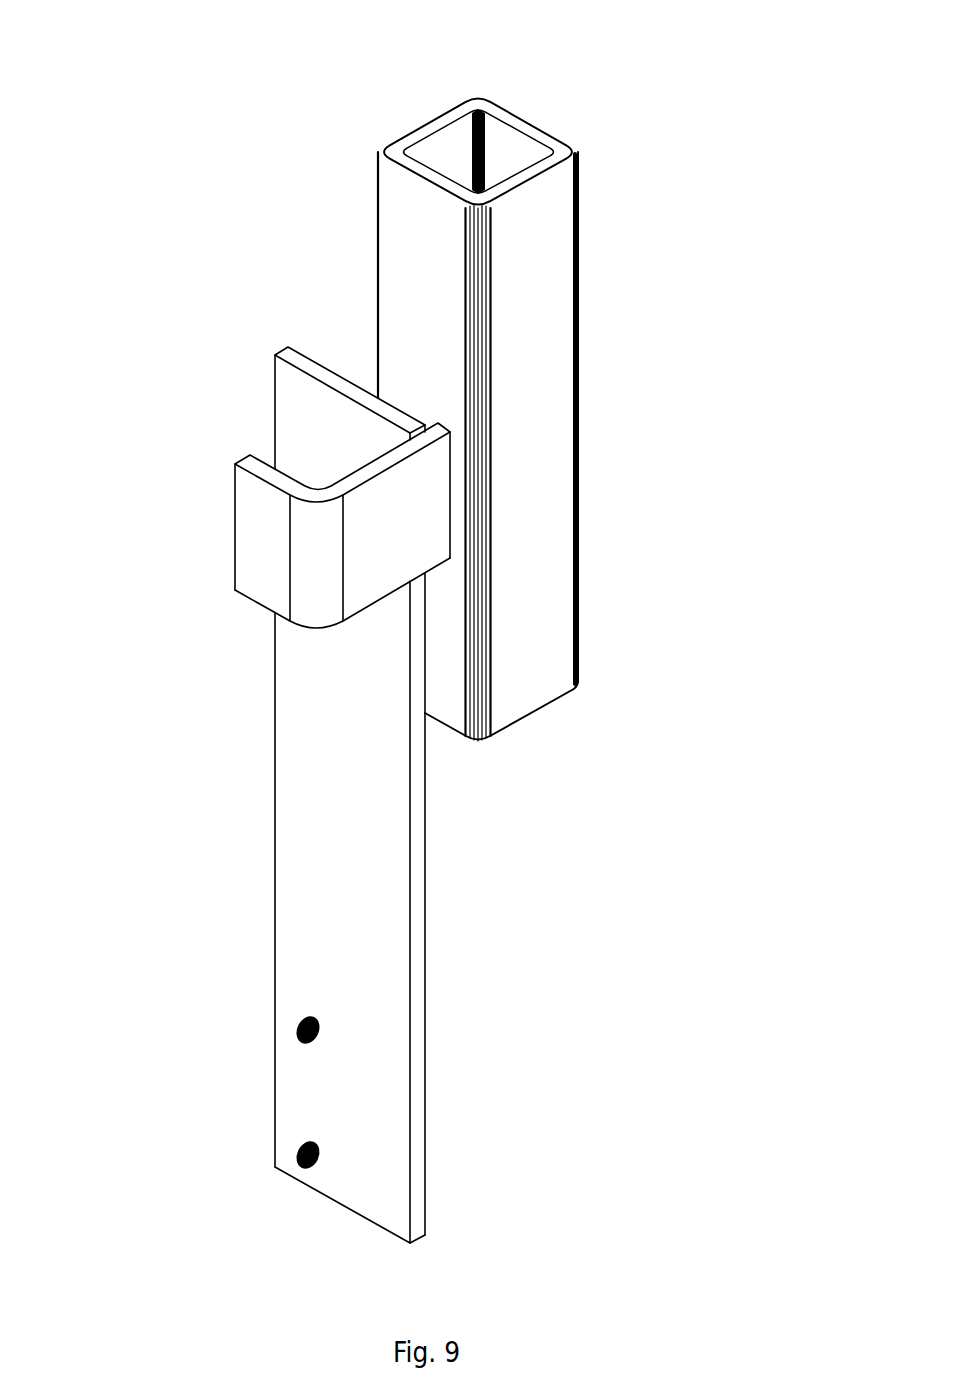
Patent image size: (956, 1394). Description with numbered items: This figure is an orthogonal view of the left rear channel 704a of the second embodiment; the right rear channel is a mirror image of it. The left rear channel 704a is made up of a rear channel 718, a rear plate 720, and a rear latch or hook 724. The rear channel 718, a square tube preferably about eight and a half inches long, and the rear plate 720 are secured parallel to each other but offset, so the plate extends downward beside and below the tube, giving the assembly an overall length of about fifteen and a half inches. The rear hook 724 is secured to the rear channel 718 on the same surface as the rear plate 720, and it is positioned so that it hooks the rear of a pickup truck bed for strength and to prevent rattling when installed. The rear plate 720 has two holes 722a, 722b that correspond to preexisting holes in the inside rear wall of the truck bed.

The left rear channel 704a is at (535, 111).
The rear channel 718 is at (540, 379).
The rear plate 720 is at (256, 795).
The hole 722a is at (300, 1020).
The hole 722b is at (300, 1142).
The rear hook 724 is at (263, 515).